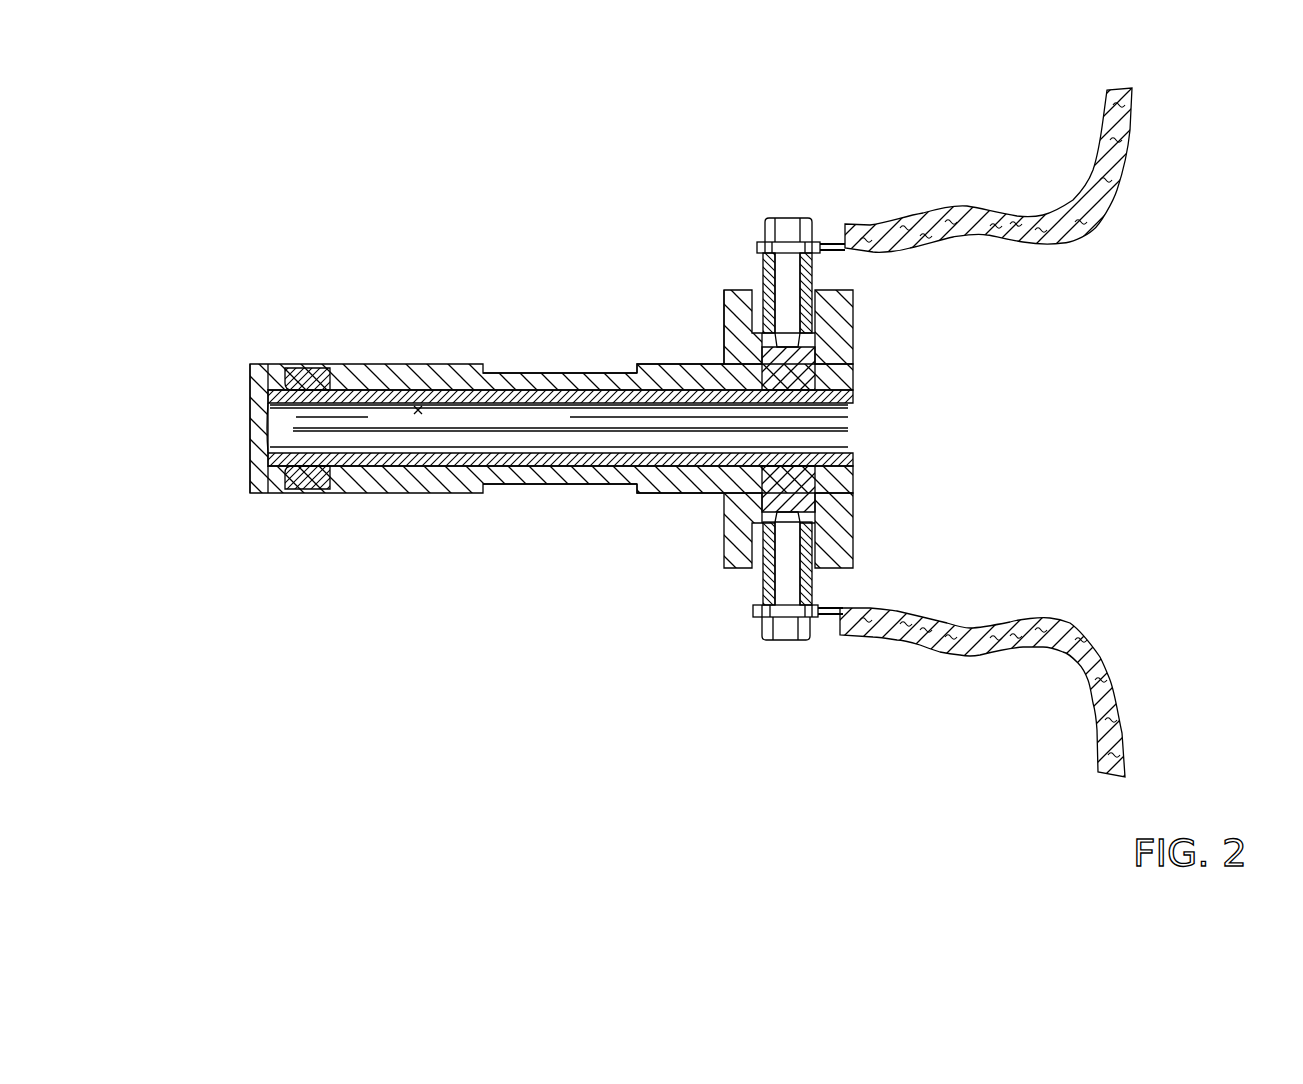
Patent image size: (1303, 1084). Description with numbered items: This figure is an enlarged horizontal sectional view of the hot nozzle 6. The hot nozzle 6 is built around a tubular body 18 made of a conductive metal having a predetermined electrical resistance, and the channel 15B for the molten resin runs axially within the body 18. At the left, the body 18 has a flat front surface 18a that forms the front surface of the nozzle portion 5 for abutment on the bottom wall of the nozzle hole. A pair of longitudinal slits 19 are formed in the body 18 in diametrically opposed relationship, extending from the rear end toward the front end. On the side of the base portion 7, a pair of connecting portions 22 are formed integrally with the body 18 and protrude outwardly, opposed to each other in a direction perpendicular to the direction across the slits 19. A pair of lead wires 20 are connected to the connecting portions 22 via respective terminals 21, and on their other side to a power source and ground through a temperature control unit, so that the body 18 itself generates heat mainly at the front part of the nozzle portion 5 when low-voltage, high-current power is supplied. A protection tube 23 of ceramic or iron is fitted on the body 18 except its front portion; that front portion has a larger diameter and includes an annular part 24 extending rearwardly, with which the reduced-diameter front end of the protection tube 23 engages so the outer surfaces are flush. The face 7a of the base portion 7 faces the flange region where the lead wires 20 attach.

The nozzle portion 5 is at (371, 495).
The hot nozzle 6 is at (553, 332).
The base portion 7 is at (857, 341).
The flange face 7a is at (721, 328).
The channel 15B is at (420, 404).
The tubular body 18 is at (586, 483).
The flat front surface 18a is at (246, 398).
The longitudinal slits 19 is at (537, 432).
The lead wires 20 is at (1130, 125).
The terminals 21 is at (787, 277).
The connecting portions 22 is at (812, 368).
The protection tube 23 is at (688, 483).
The annular part 24 is at (303, 368).